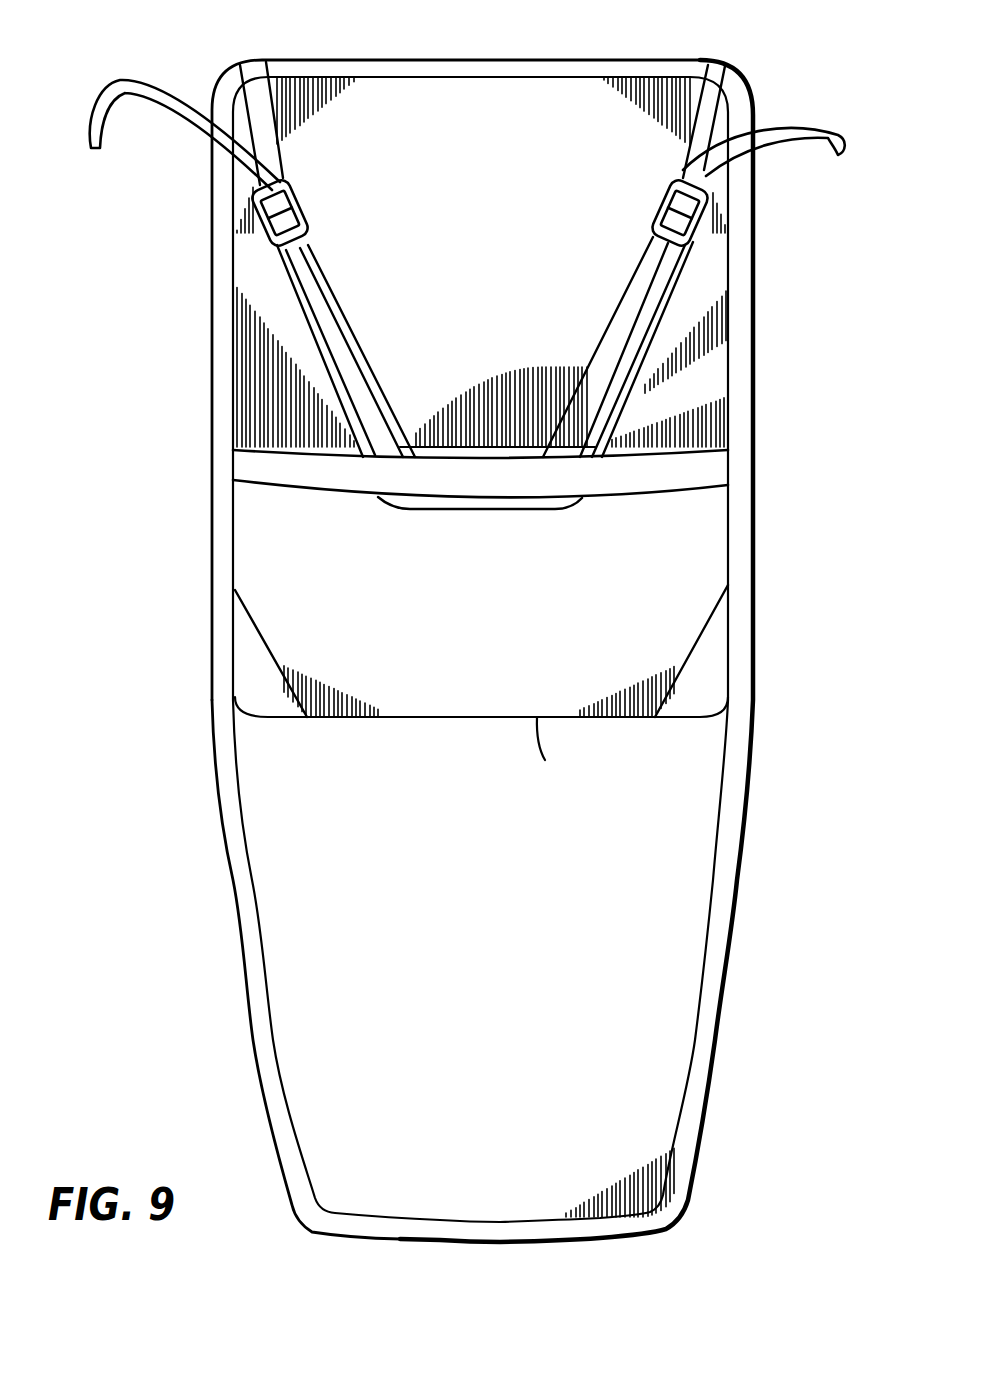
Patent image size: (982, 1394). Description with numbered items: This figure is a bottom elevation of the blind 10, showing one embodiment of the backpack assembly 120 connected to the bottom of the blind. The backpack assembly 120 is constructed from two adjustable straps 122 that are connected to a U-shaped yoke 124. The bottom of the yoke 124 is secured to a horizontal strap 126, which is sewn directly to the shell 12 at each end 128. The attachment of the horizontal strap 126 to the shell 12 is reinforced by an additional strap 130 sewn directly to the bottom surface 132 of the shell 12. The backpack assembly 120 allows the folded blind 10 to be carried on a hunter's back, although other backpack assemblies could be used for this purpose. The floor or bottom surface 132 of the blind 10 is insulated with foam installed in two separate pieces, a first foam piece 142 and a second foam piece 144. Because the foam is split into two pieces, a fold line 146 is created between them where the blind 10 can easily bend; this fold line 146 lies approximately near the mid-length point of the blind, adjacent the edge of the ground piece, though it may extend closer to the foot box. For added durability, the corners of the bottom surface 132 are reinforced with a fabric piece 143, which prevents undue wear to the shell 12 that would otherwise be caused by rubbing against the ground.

The blind 10 is at (752, 64).
The shell 12 is at (757, 367).
The backpack assembly 120 is at (698, 235).
The adjustable straps 122 is at (253, 140).
The U-shaped yoke 124 is at (643, 310).
The horizontal strap 126 is at (680, 478).
The end 128 is at (730, 457).
The additional strap 130 is at (313, 450).
The bottom surface 132 is at (500, 242).
The foam piece 142 is at (672, 967).
The fabric piece 143 is at (267, 103).
The foam piece 144 is at (385, 658).
The fold line 146 is at (537, 717).